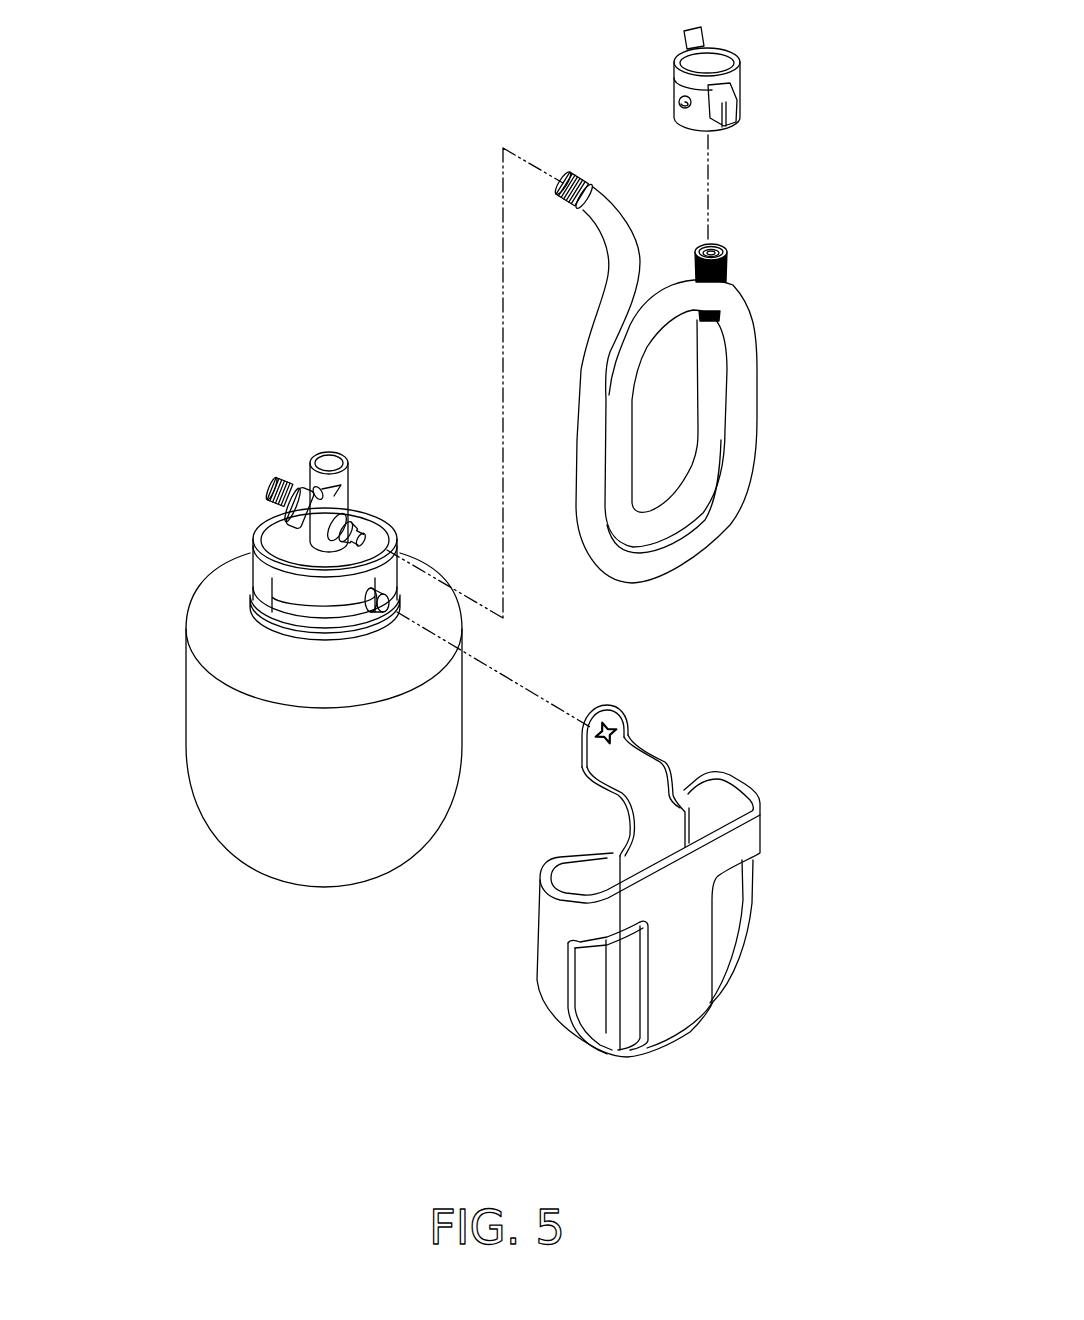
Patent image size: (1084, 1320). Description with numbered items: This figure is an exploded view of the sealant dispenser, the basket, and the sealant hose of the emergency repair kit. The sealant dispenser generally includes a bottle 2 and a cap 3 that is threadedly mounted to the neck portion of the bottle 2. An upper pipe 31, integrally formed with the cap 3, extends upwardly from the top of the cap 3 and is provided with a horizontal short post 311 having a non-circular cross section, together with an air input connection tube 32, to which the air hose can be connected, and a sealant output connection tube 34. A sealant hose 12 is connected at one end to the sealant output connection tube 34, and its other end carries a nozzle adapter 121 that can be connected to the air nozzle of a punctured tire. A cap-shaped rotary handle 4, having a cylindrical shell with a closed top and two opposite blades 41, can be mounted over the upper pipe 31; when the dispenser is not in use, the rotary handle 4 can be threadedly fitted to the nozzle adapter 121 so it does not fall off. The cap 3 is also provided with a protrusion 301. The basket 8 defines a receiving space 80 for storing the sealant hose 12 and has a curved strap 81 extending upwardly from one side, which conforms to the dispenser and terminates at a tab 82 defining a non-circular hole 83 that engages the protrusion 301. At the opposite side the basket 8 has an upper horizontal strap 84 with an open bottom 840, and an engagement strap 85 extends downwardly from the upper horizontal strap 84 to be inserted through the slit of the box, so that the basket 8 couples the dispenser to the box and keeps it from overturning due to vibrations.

The bottle 2 is at (220, 760).
The cap 3 is at (263, 553).
The upper pipe 31 is at (337, 503).
The horizontal short post 311 is at (315, 490).
The air input connection tube 32 is at (275, 481).
The sealant output connection tube 34 is at (357, 524).
The protrusion 301 is at (258, 612).
The sealant hose 12 is at (605, 208).
The nozzle adapter 121 is at (728, 268).
The rotary handle 4 is at (720, 62).
The blades 41 is at (687, 31).
The basket 8 is at (560, 1007).
The receiving space 80 is at (585, 883).
The curved strap 81 is at (640, 760).
The tab 82 is at (616, 724).
The non-circular hole 83 is at (627, 708).
The upper horizontal strap 84 is at (733, 837).
The engagement strap 85 is at (687, 1007).
The open bottom 840 is at (605, 1050).